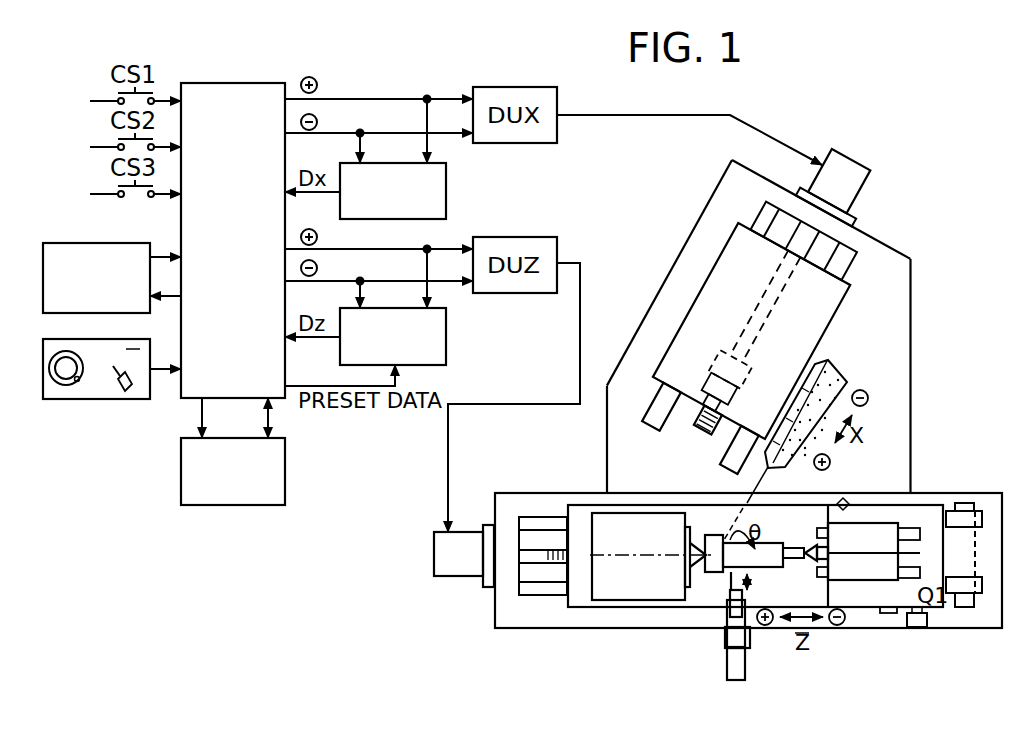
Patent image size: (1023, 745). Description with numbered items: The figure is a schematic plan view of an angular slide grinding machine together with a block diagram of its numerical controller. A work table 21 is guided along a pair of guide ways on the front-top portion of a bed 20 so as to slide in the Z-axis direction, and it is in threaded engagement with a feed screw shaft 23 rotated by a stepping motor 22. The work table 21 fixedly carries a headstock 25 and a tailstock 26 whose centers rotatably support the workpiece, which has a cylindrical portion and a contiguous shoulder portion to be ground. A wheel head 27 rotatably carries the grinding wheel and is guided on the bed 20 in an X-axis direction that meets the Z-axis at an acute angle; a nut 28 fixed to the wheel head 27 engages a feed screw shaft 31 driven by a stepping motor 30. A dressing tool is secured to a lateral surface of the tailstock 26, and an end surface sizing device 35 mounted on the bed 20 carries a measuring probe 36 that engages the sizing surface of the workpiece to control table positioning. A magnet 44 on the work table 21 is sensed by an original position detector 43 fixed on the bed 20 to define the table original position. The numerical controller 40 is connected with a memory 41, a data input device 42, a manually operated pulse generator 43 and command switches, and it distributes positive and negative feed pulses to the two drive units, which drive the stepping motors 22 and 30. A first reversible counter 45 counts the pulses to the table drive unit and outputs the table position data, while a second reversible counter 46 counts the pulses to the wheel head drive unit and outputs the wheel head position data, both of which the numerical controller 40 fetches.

The bed 20 is at (911, 364).
The work table 21 is at (930, 510).
The stepping motor 22 is at (434, 556).
The feed screw shaft 23 is at (535, 553).
The headstock 25 is at (648, 597).
The tailstock 26 is at (875, 533).
The wheel head 27 is at (830, 312).
The nut 28 is at (753, 380).
The stepping motor 30 is at (857, 186).
The feed screw shaft 31 is at (803, 248).
The end surface sizing device 35 is at (743, 605).
The measuring probe 36 is at (717, 558).
The numerical controller 40 is at (228, 85).
The memory 41 is at (230, 505).
The data input device 42 is at (64, 243).
The manually operated pulse generator 43 is at (93, 399).
The magnet 44 is at (882, 614).
The first reversible counter 45 is at (446, 347).
The second reversible counter 46 is at (446, 202).